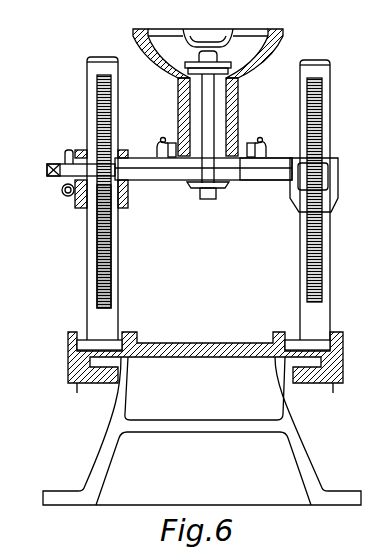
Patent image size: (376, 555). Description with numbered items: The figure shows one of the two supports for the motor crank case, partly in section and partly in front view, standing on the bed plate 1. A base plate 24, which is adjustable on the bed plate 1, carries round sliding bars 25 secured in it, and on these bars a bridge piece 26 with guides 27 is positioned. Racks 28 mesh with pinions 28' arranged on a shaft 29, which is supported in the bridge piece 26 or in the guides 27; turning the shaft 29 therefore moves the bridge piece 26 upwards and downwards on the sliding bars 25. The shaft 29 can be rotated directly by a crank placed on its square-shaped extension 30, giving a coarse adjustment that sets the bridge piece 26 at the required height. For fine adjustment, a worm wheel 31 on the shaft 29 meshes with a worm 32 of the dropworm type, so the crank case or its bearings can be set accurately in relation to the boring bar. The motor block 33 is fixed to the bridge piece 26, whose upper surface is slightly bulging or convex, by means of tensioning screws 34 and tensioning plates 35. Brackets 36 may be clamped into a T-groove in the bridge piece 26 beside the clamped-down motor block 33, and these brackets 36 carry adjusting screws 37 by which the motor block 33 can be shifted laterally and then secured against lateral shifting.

The bed plate 1 is at (276, 380).
The base plate 24 is at (199, 346).
The round sliding bars 25 is at (114, 251).
The bridge piece 26 is at (292, 158).
The guides 27 is at (123, 205).
The racks 28 is at (231, 191).
The pinions 28' is at (79, 246).
The shaft 29 is at (150, 172).
The square-shaped extension 30 is at (56, 172).
The worm wheel 31 is at (67, 153).
The worm 32 is at (77, 198).
The motor block 33 is at (271, 47).
The tensioning screws 34 is at (210, 108).
The tensioning plates 35 is at (246, 71).
The brackets 36 is at (158, 150).
The adjusting screws 37 is at (162, 137).